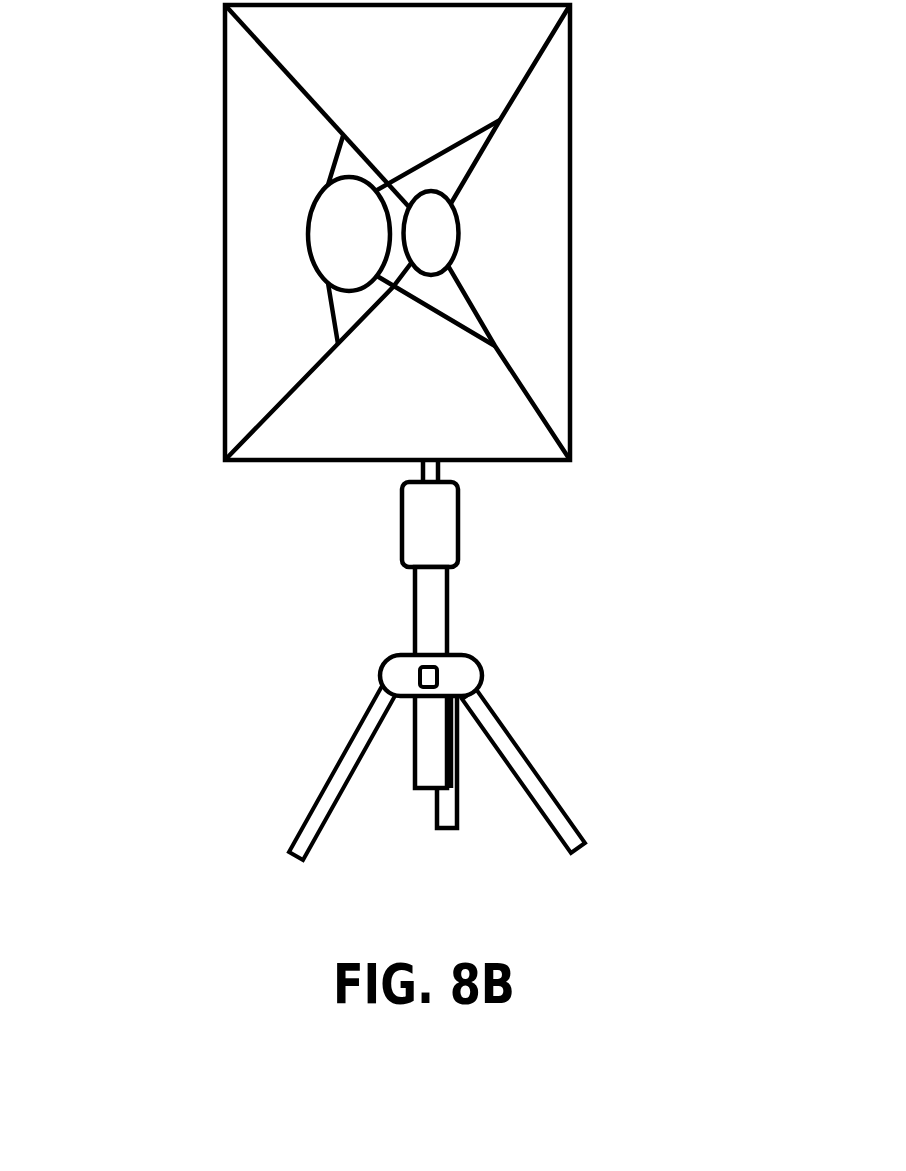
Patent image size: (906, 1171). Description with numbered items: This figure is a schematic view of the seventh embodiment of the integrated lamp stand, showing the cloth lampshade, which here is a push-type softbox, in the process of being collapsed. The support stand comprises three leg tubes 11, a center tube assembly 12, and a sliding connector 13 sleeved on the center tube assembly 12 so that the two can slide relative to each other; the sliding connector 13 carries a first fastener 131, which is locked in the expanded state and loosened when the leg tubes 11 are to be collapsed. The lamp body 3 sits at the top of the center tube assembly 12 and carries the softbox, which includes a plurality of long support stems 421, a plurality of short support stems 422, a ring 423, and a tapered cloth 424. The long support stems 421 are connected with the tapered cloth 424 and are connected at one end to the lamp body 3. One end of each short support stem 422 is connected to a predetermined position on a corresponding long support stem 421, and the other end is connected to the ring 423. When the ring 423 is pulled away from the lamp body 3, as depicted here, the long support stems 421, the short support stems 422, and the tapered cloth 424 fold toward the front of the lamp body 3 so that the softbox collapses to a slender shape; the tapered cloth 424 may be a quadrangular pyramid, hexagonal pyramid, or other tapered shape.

The lamp body 3 is at (430, 242).
The leg tubes 11 is at (558, 792).
The center tube assembly 12 is at (447, 615).
The sliding connector 13 is at (380, 672).
The first fastener 131 is at (437, 677).
The long support stems 421 is at (272, 53).
The short support stems 422 is at (427, 167).
The ring 423 is at (310, 253).
The tapered cloth 424 is at (250, 140).